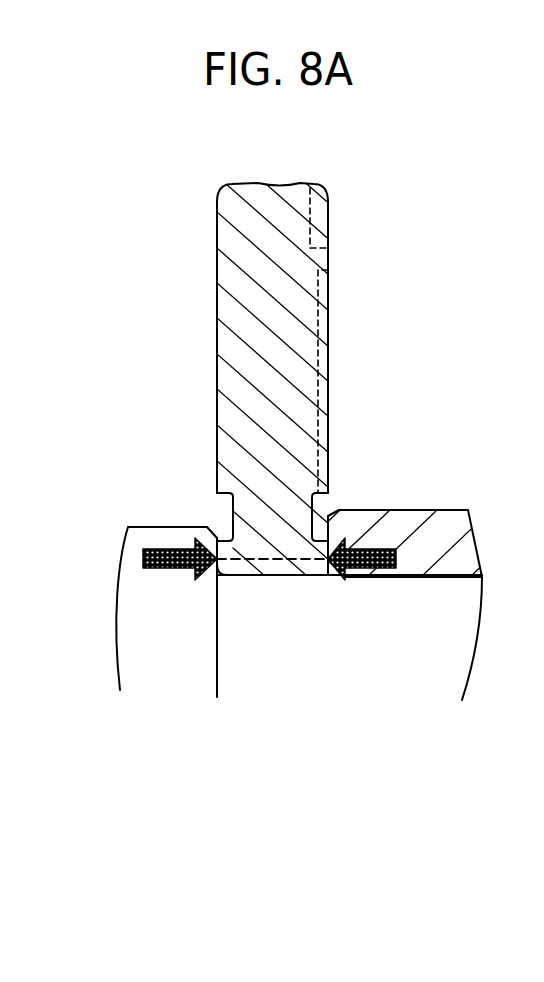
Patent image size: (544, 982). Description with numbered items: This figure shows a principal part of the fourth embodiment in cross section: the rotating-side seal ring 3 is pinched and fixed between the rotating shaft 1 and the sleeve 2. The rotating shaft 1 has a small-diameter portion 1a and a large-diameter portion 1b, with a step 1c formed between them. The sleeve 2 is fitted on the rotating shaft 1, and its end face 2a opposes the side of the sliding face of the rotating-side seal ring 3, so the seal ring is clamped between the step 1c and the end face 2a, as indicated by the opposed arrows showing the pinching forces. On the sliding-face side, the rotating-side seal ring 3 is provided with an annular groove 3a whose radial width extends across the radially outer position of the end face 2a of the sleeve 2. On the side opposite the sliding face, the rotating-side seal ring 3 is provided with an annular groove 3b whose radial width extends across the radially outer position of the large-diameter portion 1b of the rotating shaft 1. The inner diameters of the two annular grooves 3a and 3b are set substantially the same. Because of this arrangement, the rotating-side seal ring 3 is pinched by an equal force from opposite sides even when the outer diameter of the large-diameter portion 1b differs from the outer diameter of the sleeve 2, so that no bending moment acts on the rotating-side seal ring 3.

The rotating shaft 1 is at (321, 742).
The small-diameter portion 1a is at (397, 575).
The large-diameter portion 1b is at (147, 527).
The step 1c is at (217, 577).
The sleeve 2 is at (435, 530).
The end face 2a is at (327, 560).
The rotating-side seal ring 3 is at (217, 280).
The annular groove 3a is at (326, 525).
The annular groove 3b is at (217, 508).